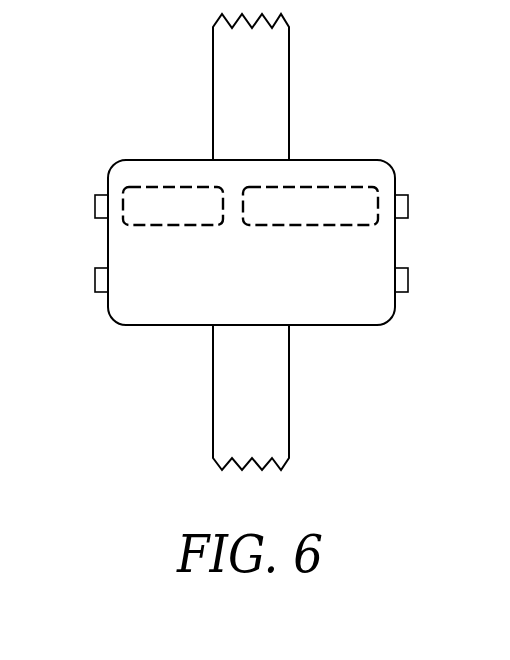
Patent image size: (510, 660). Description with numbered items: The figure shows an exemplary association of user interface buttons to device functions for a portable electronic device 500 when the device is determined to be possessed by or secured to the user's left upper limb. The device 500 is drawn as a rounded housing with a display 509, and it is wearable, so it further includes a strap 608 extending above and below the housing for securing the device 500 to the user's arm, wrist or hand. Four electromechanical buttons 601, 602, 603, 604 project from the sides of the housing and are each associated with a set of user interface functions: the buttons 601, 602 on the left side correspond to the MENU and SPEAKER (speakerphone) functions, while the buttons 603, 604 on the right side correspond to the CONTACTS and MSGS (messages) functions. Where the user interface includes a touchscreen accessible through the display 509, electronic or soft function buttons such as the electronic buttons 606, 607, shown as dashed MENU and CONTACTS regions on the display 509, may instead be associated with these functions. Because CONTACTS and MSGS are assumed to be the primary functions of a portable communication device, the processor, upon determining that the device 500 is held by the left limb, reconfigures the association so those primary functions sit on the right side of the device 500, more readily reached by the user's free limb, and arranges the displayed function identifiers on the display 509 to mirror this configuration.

The portable electronic device 500 is at (250, 242).
The device display 509 is at (380, 161).
The electromechanical button 601 is at (95, 206).
The electromechanical button 602 is at (95, 279).
The electromechanical button 603 is at (408, 206).
The electromechanical button 604 is at (408, 280).
The electronic button 606 is at (200, 225).
The electronic button 607 is at (312, 225).
The strap 608 is at (278, 421).